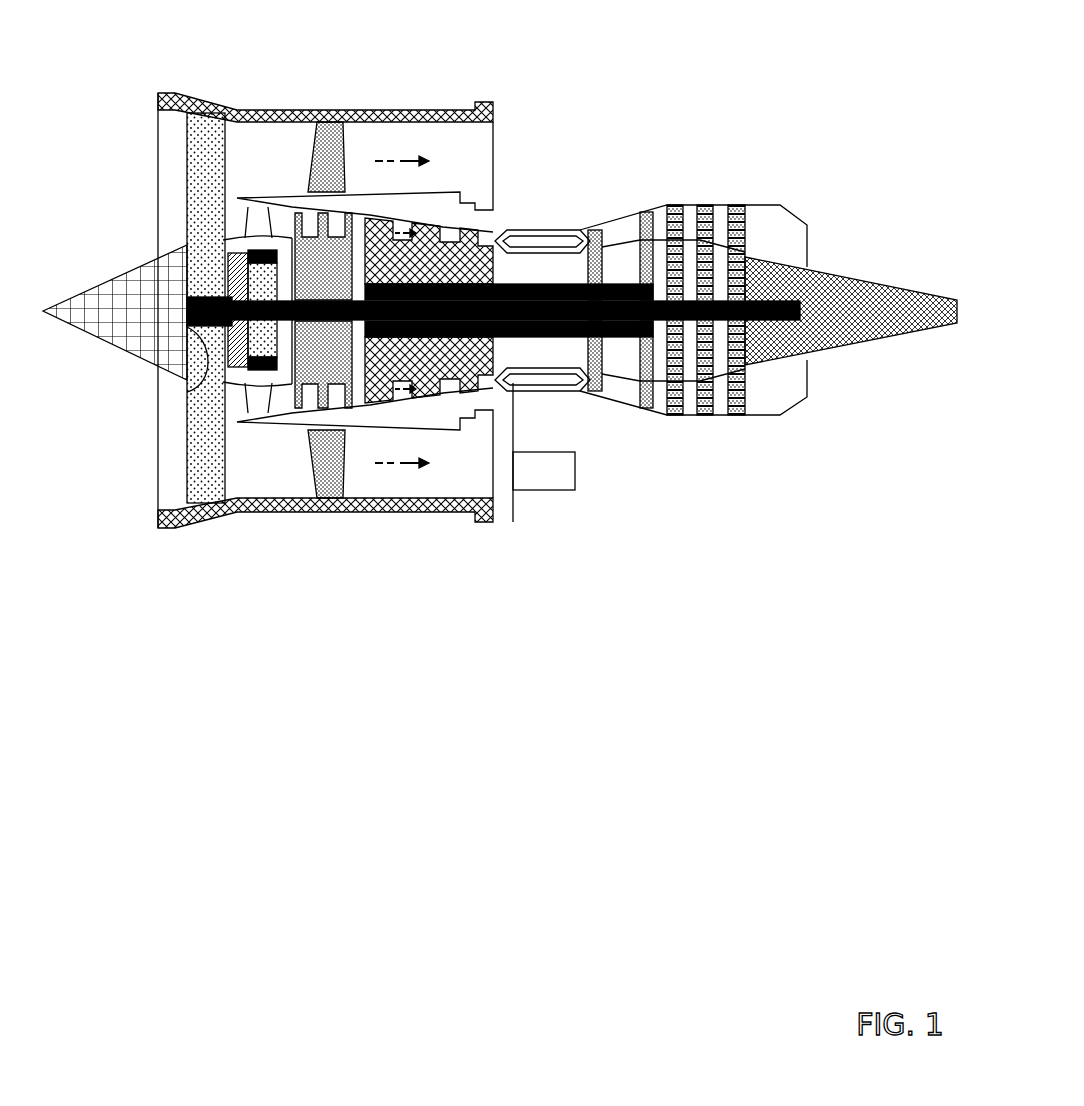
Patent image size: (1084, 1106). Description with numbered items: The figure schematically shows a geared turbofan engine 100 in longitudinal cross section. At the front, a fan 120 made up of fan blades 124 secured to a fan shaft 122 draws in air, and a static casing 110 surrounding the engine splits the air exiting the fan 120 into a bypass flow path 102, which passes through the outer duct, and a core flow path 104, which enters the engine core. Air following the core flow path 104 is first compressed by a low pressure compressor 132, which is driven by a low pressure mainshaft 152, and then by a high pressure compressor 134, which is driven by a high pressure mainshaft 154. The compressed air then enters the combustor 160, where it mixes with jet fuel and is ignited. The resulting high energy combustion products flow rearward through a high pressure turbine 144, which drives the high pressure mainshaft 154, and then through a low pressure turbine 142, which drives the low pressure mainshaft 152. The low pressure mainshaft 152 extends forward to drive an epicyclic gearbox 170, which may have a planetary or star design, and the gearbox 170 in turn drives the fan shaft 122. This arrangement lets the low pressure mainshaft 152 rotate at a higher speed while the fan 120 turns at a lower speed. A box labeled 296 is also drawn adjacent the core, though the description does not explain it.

The turbofan engine 100 is at (803, 73).
The bypass flow path 102 is at (395, 162).
The core flow path 104 is at (404, 226).
The static casing 110 is at (212, 102).
The fan 120 is at (187, 195).
The fan shaft 122 is at (183, 391).
The fan blades 124 is at (165, 279).
The low pressure compressor 132 is at (353, 393).
The high pressure compressor 134 is at (492, 228).
The low pressure turbine 142 is at (733, 413).
The high pressure turbine 144 is at (596, 230).
The low pressure mainshaft 152 is at (747, 317).
The high pressure mainshaft 154 is at (538, 287).
The combustor 160 is at (543, 382).
The epicyclic gearbox 170 is at (232, 378).
The controller 296 is at (544, 452).